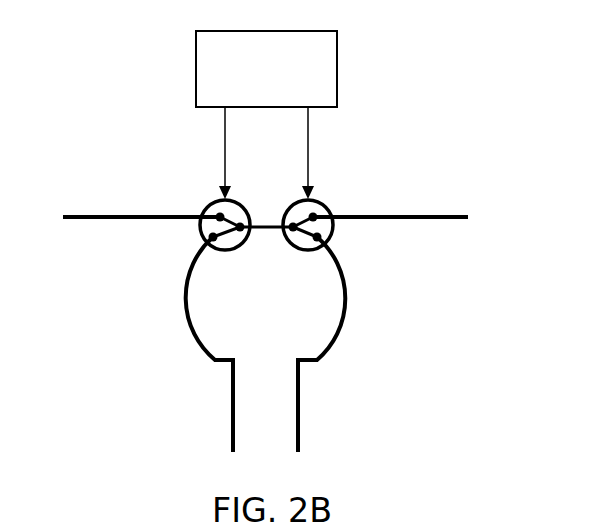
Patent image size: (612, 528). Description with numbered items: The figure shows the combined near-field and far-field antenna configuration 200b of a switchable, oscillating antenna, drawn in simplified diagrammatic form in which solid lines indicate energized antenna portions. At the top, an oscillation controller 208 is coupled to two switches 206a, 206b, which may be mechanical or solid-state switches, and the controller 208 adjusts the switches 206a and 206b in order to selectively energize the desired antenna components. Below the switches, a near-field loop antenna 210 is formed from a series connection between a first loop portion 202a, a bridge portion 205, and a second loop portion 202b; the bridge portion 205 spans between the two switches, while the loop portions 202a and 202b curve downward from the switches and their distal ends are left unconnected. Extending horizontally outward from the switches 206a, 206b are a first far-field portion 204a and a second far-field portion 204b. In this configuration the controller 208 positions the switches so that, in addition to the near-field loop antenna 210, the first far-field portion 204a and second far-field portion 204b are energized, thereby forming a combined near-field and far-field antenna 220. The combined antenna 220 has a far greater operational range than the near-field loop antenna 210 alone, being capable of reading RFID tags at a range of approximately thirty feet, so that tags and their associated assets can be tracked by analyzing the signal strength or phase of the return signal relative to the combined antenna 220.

The combined near-field and far-field antenna configuration 200b is at (426, 65).
The first loop portion 202a is at (188, 332).
The second loop portion 202b is at (347, 324).
The first far-field portion 204a is at (63, 217).
The second far-field portion 204b is at (468, 217).
The bridge portion 205 is at (267, 232).
The switch 206a is at (207, 210).
The switch 206b is at (325, 204).
The oscillation controller 208 is at (266, 115).
The near-field loop antenna 210 is at (228, 413).
The combined near-field and far-field antenna 220 is at (122, 228).